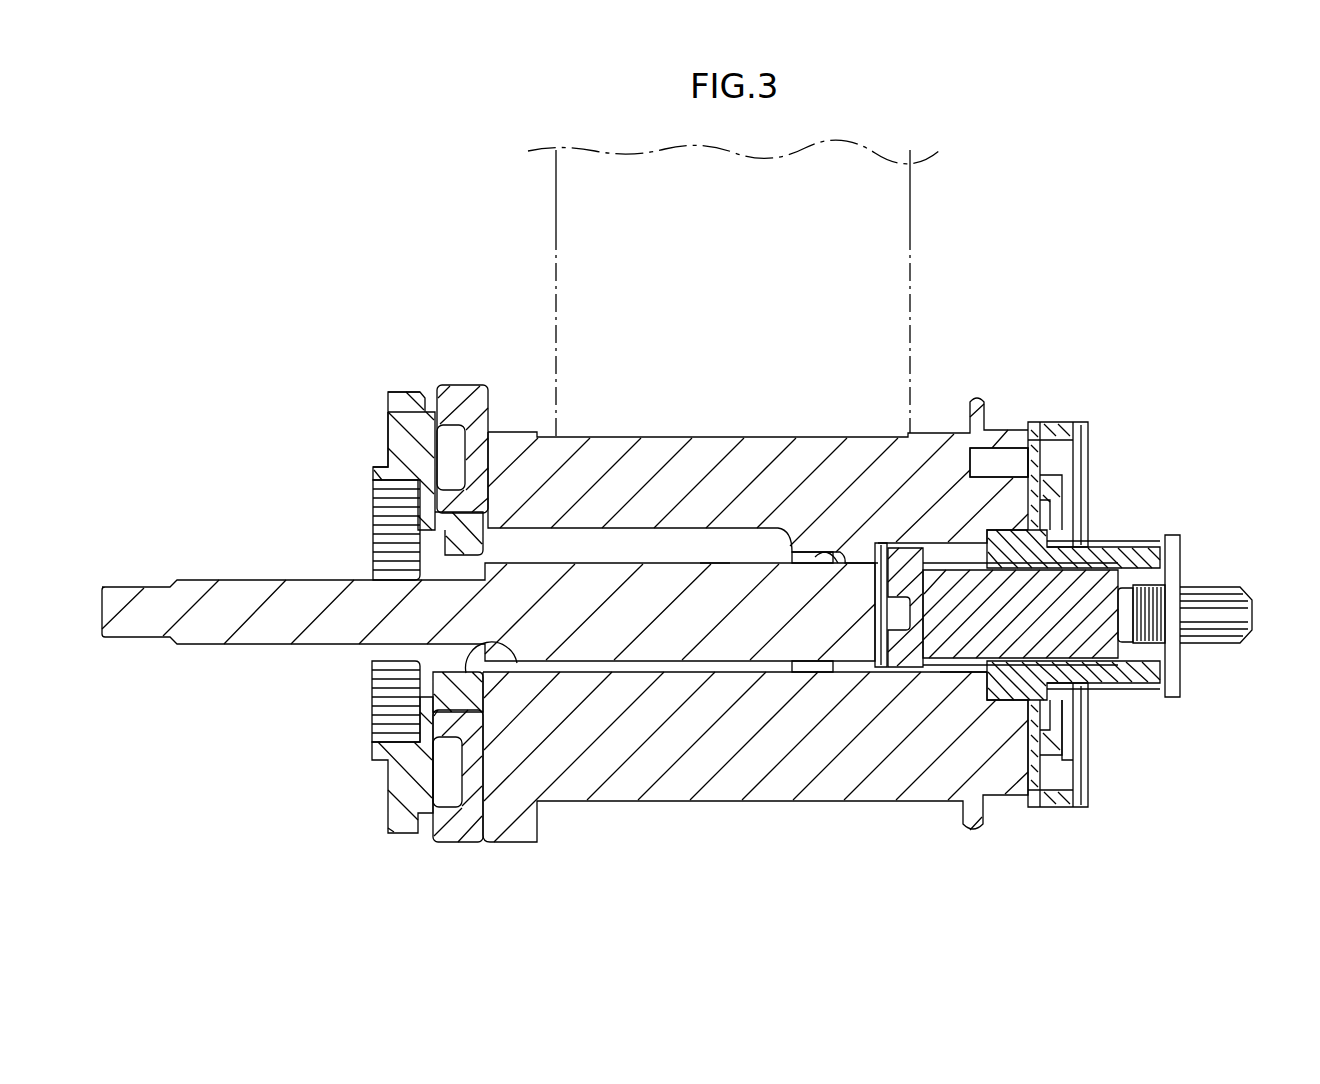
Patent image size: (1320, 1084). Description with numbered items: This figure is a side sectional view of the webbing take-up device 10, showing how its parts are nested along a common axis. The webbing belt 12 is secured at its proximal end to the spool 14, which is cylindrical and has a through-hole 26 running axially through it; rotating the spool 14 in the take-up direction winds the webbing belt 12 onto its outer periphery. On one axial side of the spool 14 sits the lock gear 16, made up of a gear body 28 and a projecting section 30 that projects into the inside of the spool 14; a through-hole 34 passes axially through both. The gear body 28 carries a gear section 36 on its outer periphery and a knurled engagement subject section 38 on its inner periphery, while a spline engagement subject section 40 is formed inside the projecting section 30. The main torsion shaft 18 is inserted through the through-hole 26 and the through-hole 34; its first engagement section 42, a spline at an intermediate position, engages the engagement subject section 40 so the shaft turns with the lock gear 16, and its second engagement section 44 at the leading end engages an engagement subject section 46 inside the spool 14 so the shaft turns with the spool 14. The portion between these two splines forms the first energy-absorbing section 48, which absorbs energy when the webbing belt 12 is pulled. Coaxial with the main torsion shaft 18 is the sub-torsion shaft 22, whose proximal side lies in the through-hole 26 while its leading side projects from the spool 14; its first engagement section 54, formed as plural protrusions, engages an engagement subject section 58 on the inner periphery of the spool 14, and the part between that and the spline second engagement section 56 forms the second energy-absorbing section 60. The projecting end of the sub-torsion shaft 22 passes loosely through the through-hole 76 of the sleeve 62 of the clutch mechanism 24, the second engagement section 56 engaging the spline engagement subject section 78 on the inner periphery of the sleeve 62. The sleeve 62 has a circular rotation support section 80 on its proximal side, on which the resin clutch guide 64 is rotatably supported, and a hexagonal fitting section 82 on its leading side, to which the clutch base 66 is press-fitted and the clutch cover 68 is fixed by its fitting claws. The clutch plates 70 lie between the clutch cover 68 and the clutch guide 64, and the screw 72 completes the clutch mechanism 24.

The webbing take-up device 10 is at (362, 262).
The webbing belt 12 is at (912, 270).
The spool 14 is at (703, 810).
The lock gear 16 is at (382, 415).
The main torsion shaft 18 is at (603, 552).
The sub-torsion shaft 22 is at (957, 553).
The clutch mechanism 24 is at (1065, 410).
The through-hole 26 is at (670, 538).
The gear body 28 is at (388, 460).
The projecting section 30 is at (472, 503).
The through-hole 34 is at (417, 563).
The gear section 36 is at (400, 392).
The engagement subject section 38 is at (372, 672).
The engagement subject section 40 is at (515, 668).
The first engagement section 42 is at (456, 740).
The second engagement section 44 is at (838, 563).
The engagement subject section 46 is at (805, 555).
The first energy-absorbing section 48 is at (714, 563).
The first engagement section 54 is at (903, 540).
The second engagement section 56 is at (1125, 568).
The engagement subject section 58 is at (940, 557).
The second energy-absorbing section 60 is at (965, 552).
The sleeve 62 is at (1150, 536).
The clutch guide 64 is at (1033, 707).
The clutch base 66 is at (1077, 673).
The clutch cover 68 is at (1090, 775).
The clutch plates 70 is at (1053, 783).
The screw 72 is at (1226, 582).
The through-hole 76 is at (970, 677).
The engagement subject section 78 is at (1162, 577).
The rotation support section 80 is at (1012, 448).
The fitting section 82 is at (1073, 722).